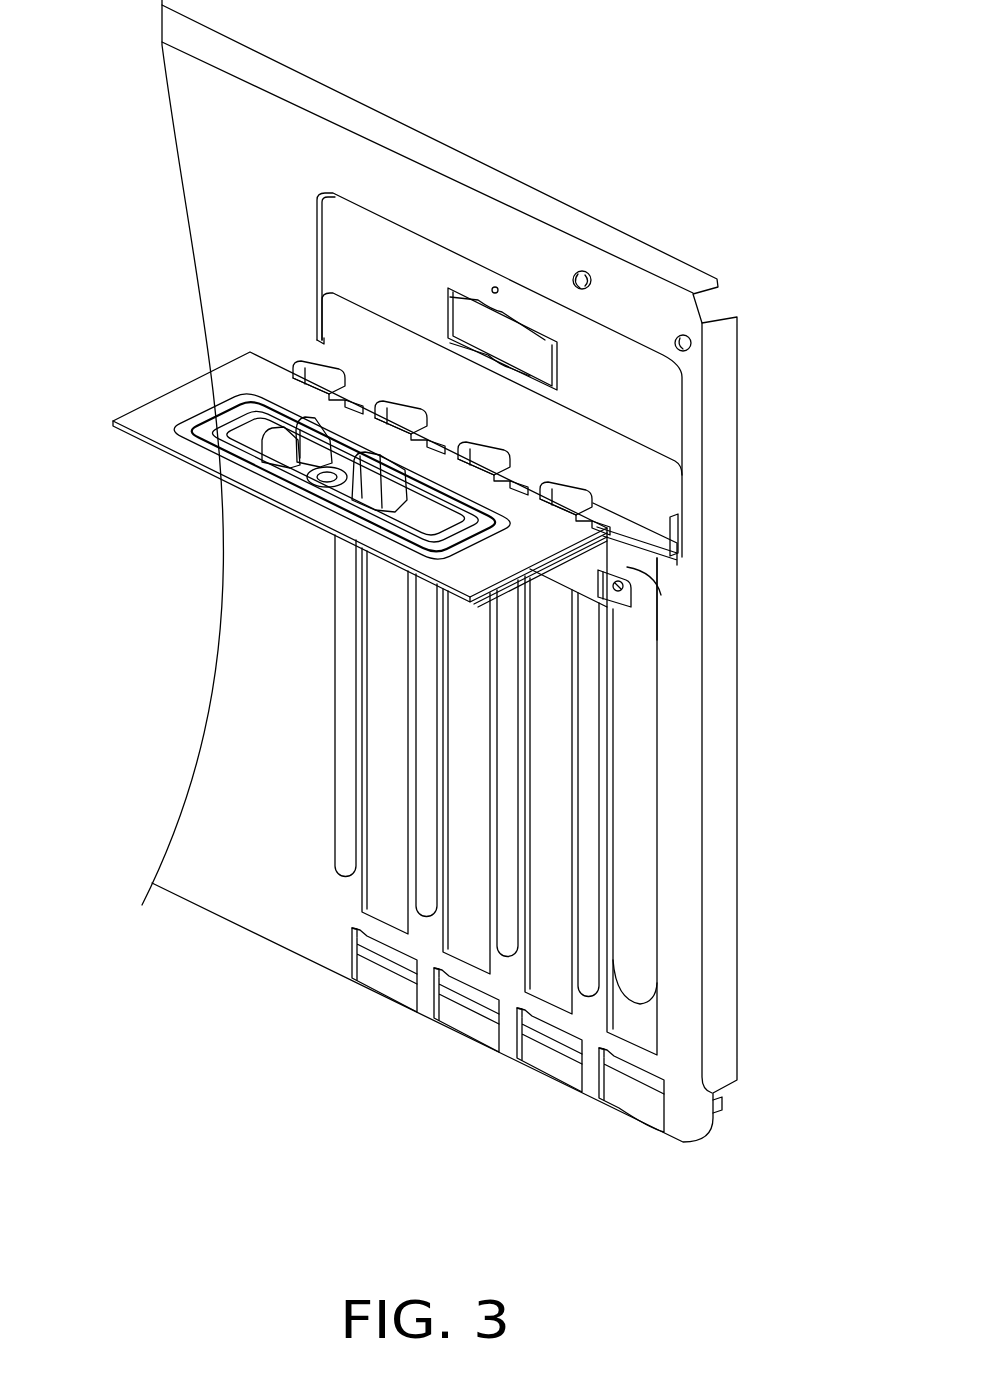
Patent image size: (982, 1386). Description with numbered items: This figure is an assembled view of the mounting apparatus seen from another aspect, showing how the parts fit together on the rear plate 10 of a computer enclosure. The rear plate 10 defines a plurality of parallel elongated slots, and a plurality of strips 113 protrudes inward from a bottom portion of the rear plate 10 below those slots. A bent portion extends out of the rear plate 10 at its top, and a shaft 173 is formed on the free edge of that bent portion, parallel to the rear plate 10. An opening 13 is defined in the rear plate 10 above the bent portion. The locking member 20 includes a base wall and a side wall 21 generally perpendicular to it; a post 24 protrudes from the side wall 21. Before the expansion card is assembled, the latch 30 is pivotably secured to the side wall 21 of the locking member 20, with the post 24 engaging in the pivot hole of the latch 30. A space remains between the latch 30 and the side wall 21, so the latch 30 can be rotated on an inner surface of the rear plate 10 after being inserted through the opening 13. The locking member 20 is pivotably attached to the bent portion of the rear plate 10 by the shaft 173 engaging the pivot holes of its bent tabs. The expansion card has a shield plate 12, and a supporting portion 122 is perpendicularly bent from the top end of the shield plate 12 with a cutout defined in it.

The rear plate 10 is at (492, 605).
The shield plate 12 is at (647, 968).
The opening 13 is at (492, 328).
The locking member 20 is at (332, 456).
The side wall 21 is at (212, 385).
The post 24 is at (307, 500).
The latch 30 is at (303, 477).
The strips 113 is at (603, 1100).
The supporting portion 122 is at (638, 537).
The shaft 173 is at (625, 587).